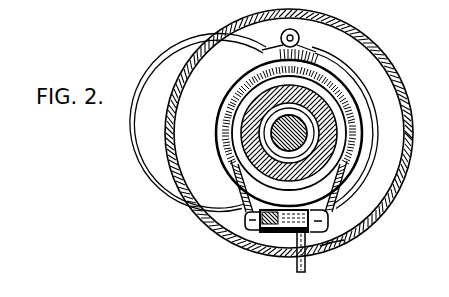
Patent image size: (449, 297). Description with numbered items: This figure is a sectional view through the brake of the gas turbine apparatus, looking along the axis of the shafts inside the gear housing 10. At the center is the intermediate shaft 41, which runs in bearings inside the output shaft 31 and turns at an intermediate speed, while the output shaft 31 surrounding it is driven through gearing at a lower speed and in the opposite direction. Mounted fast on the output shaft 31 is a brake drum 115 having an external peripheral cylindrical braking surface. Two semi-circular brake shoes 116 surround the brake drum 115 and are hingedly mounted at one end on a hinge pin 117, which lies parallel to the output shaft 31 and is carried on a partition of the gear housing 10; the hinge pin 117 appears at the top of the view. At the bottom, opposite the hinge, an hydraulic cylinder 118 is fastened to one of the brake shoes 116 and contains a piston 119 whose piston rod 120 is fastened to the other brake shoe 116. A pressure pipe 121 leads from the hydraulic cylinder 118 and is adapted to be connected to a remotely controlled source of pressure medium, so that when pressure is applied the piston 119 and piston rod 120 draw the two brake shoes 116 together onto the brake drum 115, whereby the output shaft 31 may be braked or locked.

The gear housing 10 is at (394, 70).
The output shaft 31 is at (331, 148).
The intermediate shaft 41 is at (305, 128).
The brake drum 115 is at (233, 171).
The brake shoes 116 is at (243, 69).
The hinge pin 117 is at (300, 40).
The hydraulic cylinder 118 is at (268, 232).
The piston 119 is at (264, 247).
The piston rod 120 is at (333, 248).
The pressure pipe 121 is at (306, 268).